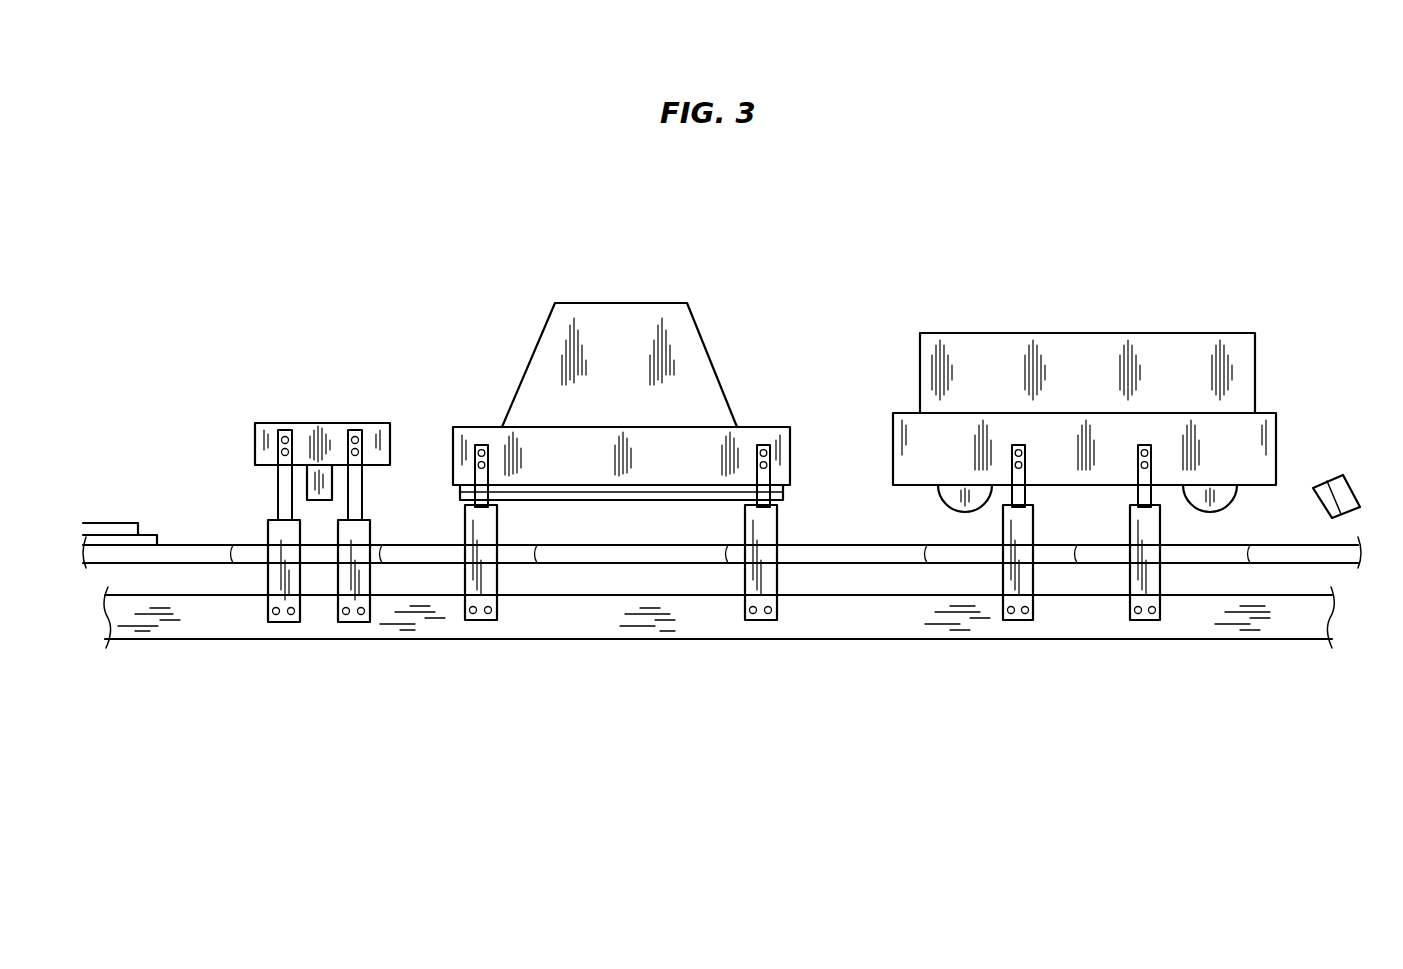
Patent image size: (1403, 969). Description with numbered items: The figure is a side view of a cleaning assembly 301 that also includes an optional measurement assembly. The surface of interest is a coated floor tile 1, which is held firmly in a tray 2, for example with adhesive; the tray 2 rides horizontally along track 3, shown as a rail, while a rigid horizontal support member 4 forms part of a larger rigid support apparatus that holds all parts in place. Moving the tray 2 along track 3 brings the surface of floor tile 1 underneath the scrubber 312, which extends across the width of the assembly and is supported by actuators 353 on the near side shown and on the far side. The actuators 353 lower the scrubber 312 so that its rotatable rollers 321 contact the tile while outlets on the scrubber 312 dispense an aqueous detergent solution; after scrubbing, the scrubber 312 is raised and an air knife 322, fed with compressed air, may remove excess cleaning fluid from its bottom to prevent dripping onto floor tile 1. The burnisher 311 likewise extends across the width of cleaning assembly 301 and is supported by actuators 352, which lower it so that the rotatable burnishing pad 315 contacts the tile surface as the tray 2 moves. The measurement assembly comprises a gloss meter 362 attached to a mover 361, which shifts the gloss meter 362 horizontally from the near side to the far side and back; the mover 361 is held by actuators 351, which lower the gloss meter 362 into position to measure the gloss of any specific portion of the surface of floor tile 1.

The cleaning assembly 301 is at (878, 230).
The coated floor tile 1 is at (111, 522).
The tray 2 is at (155, 534).
The track 3 is at (205, 544).
The rigid horizontal support member 4 is at (120, 640).
The burnisher 311 is at (619, 302).
The scrubber 312 is at (1074, 332).
The burnishing pad 315 is at (456, 495).
The rollers 321 is at (940, 495).
The air knife 322 is at (1346, 476).
The actuators 351 is at (342, 623).
The actuators 352 is at (480, 622).
The actuators 353 is at (1017, 622).
The mover 361 is at (319, 423).
The gloss meter 362 is at (308, 483).